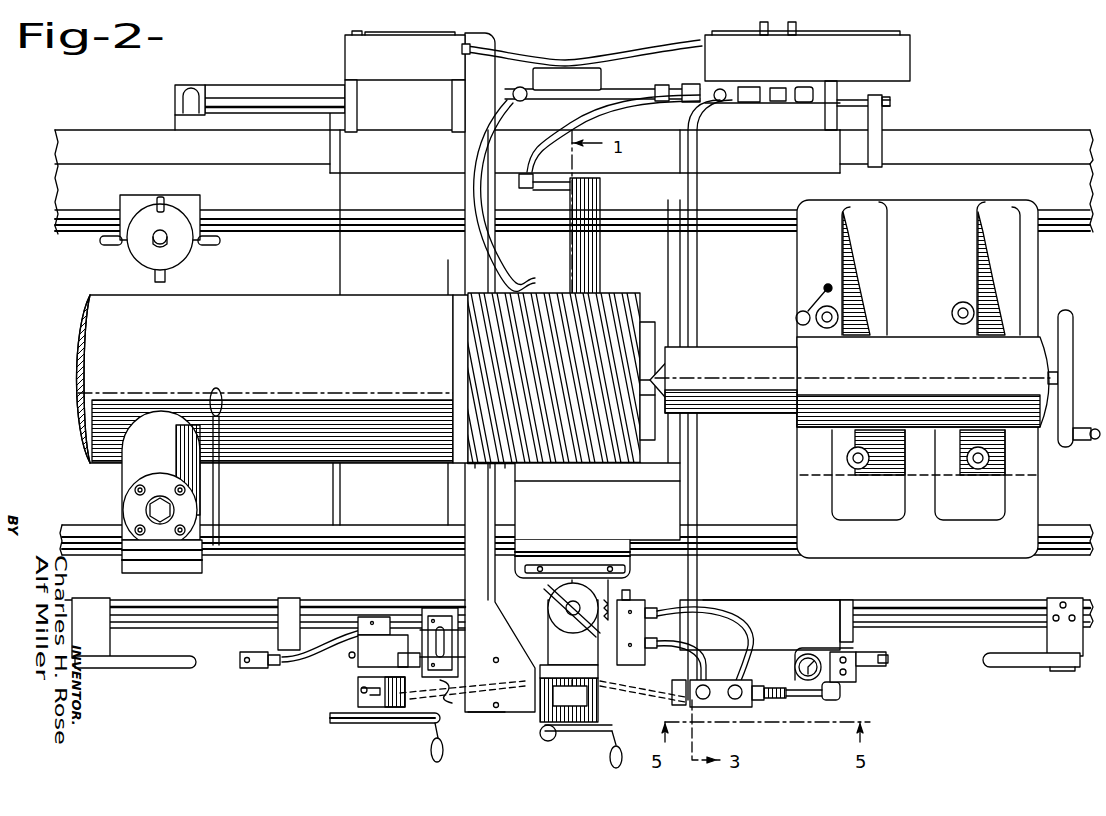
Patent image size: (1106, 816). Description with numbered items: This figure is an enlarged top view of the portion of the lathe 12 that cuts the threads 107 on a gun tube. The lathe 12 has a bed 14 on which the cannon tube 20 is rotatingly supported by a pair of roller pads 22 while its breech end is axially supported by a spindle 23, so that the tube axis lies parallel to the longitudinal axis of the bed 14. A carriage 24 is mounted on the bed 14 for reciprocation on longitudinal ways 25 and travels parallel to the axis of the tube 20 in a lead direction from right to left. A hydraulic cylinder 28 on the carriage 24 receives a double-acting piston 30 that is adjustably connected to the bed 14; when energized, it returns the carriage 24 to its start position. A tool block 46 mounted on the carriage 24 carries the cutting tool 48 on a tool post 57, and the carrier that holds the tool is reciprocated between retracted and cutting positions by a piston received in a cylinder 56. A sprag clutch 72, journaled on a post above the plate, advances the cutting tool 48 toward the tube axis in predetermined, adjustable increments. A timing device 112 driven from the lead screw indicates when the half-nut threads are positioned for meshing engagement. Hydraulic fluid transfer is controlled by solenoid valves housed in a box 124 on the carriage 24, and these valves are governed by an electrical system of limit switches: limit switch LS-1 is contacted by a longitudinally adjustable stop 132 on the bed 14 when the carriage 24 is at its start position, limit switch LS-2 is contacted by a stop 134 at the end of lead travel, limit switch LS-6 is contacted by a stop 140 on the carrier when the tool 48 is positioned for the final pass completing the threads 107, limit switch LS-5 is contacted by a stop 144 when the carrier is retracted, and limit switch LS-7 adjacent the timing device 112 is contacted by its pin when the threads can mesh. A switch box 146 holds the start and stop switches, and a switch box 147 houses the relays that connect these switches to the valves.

The lathe 12 is at (963, 106).
The bed 14 is at (1064, 166).
The cannon tube 20 is at (284, 448).
The roller pads 22 is at (203, 308).
The spindle 23 is at (769, 394).
The carriage 24 is at (493, 563).
The longitudinal ways 25 is at (253, 155).
The hydraulic cylinder 28 is at (268, 93).
The piston 30 is at (858, 99).
The tool block 46 is at (662, 577).
The cutting tool 48 is at (519, 466).
The cylinder 56 is at (588, 229).
The tool post 57 is at (604, 523).
The sprag clutch 72 is at (549, 614).
The threads 107 is at (601, 296).
The timing device 112 is at (789, 665).
The box 124 is at (845, 40).
The stop 132 is at (1023, 667).
The stop 134 is at (160, 666).
The stop 140 is at (581, 716).
The stop 144 is at (632, 576).
The switch box 146 is at (360, 668).
The switch box 147 is at (441, 48).
The limit switch LS-1 is at (888, 662).
The limit switch LS-2 is at (259, 668).
The limit switch LS-5 is at (672, 590).
The limit switch LS-6 is at (726, 647).
The limit switch LS-7 is at (852, 668).